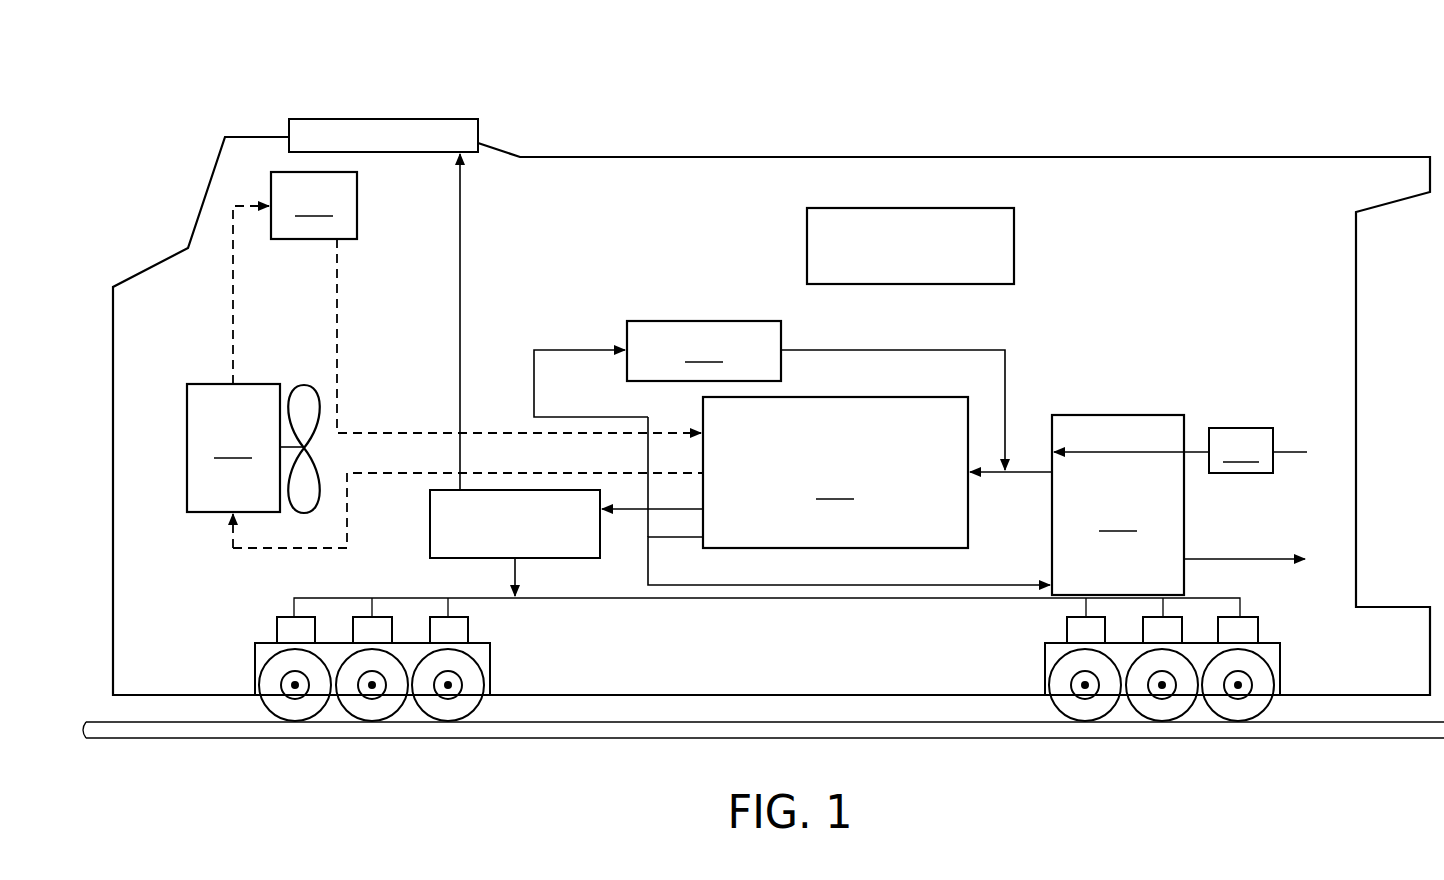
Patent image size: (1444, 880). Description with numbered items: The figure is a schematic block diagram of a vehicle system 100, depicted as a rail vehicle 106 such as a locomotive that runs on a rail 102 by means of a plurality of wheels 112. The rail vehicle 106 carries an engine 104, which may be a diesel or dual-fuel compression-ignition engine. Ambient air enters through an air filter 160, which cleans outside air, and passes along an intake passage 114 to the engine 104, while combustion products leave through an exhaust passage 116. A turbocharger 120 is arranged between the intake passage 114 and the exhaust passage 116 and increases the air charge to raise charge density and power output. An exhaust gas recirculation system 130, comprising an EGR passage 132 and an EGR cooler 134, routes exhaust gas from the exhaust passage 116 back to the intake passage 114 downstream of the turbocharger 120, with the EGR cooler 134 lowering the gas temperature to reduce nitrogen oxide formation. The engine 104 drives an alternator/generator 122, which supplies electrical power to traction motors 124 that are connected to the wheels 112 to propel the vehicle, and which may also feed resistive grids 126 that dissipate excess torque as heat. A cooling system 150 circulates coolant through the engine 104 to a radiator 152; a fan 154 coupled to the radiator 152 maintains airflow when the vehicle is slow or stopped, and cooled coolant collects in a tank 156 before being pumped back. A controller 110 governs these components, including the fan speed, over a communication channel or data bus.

The vehicle system 100 is at (1252, 92).
The rail 102 is at (1355, 740).
The engine 104 is at (785, 472).
The rail vehicle 106 is at (1085, 157).
The controller 110 is at (1014, 222).
The wheels 112 is at (473, 673).
The intake passage 114 is at (1033, 473).
The exhaust passage 116 is at (668, 540).
The turbocharger 120 is at (1118, 505).
The alternator/generator 122 is at (430, 528).
The traction motors 124 is at (468, 630).
The resistive grids 126 is at (460, 117).
The exhaust gas recirculation system 130 is at (1006, 338).
The EGR passage 132 is at (552, 350).
The EGR cooler 134 is at (704, 351).
The cooling system 150 is at (207, 336).
The radiator 152 is at (233, 448).
The fan 154 is at (315, 385).
The tank 156 is at (295, 278).
The air filter 160 is at (1241, 450).